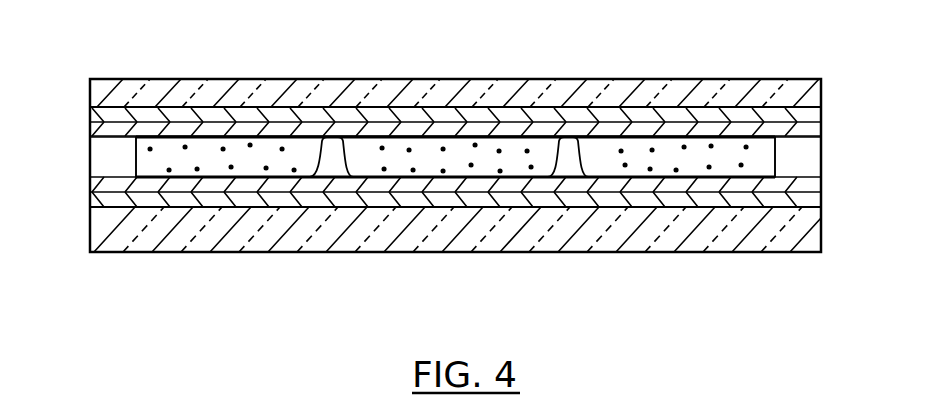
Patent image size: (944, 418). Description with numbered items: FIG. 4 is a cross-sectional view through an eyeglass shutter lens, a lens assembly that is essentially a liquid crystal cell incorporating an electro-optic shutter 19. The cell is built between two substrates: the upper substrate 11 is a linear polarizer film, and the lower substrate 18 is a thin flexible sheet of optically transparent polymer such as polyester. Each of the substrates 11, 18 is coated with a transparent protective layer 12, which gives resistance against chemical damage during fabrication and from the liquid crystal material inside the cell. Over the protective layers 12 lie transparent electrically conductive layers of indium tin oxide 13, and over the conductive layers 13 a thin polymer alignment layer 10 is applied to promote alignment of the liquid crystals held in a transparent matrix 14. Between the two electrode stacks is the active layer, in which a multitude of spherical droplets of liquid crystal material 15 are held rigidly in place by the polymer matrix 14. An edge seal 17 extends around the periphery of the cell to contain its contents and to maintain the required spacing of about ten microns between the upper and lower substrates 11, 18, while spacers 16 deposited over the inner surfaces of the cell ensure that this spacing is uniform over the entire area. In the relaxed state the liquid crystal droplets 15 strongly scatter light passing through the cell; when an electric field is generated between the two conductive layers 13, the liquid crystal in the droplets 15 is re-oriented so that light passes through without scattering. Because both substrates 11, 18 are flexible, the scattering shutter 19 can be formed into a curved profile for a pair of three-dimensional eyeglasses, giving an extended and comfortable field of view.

The polymer alignment layer 10 is at (165, 138).
The substrate 11 is at (812, 97).
The transparent protective layer 12 is at (815, 118).
The transparent electrically conductive layer 13 is at (92, 128).
The polymer matrix 14 is at (615, 157).
The liquid crystal material droplets 15 is at (204, 148).
The spacers 16 is at (333, 142).
The edge seal 17 is at (97, 162).
The substrate 18 is at (470, 230).
The electro-optic shutter 19 is at (251, 259).